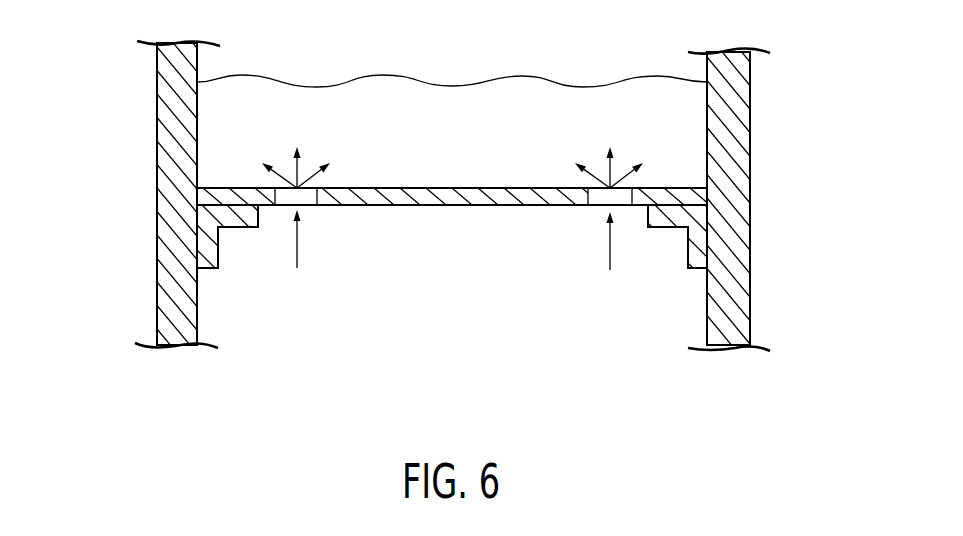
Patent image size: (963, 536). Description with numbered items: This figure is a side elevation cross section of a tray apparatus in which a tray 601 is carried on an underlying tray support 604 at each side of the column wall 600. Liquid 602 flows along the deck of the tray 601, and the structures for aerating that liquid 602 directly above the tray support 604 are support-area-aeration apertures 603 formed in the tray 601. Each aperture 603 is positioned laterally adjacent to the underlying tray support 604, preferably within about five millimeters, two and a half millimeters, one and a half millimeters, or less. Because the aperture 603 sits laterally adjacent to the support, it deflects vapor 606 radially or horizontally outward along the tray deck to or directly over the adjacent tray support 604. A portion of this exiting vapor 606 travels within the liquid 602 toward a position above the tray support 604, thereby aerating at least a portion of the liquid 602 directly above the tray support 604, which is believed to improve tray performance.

The housing wall 600 is at (750, 70).
The tray 601 is at (710, 189).
The liquid 602 is at (680, 140).
The support-area-aeration aperture 603 is at (295, 197).
The tray support 604 is at (698, 247).
The vapor 606 is at (297, 187).